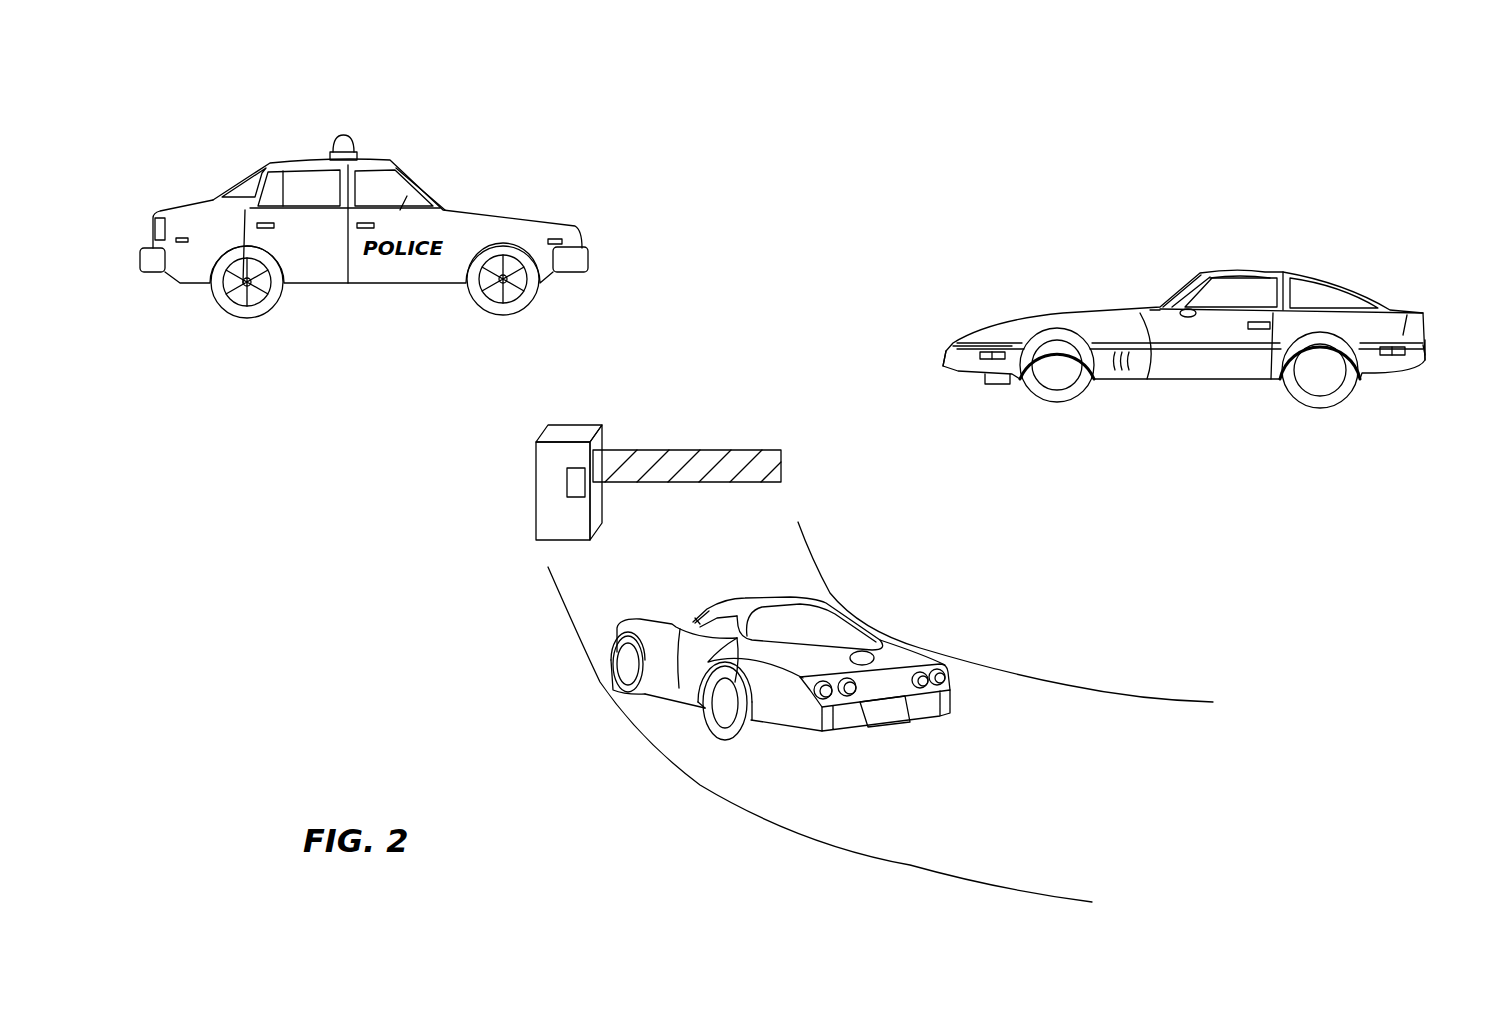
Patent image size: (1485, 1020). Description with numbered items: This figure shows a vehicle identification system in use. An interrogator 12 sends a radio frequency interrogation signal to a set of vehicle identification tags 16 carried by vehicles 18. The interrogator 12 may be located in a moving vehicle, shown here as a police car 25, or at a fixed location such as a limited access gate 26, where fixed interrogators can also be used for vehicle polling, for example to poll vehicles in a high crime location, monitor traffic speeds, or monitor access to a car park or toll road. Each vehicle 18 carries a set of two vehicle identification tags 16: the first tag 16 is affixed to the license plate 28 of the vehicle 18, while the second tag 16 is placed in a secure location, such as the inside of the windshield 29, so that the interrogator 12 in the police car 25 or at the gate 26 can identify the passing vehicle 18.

The interrogator 12 is at (430, 183).
The vehicle identification tag 16 is at (1155, 305).
The vehicle 18 is at (1284, 272).
The police car 25 is at (268, 160).
The limited access gate 26 is at (562, 432).
The license plate 28 is at (948, 358).
The windshield 29 is at (1150, 310).